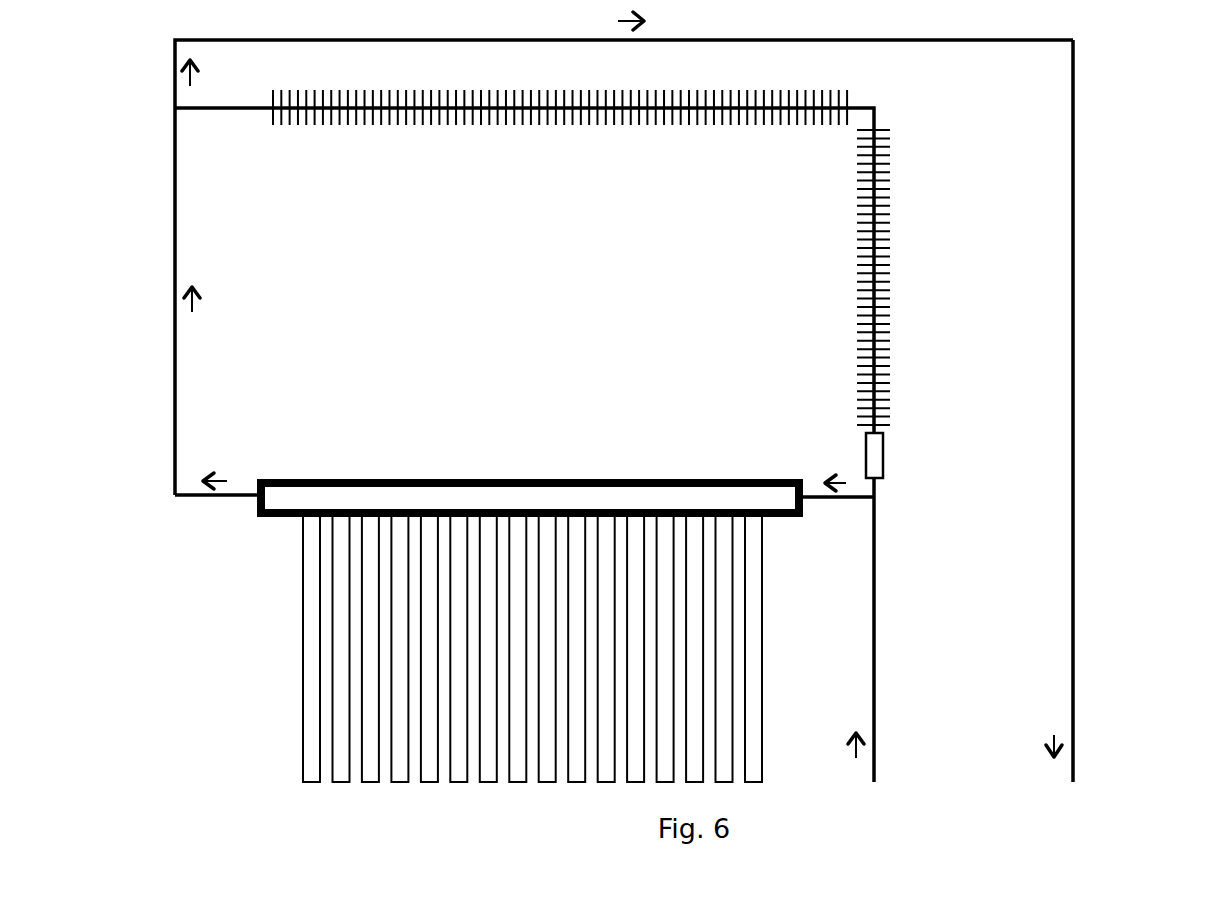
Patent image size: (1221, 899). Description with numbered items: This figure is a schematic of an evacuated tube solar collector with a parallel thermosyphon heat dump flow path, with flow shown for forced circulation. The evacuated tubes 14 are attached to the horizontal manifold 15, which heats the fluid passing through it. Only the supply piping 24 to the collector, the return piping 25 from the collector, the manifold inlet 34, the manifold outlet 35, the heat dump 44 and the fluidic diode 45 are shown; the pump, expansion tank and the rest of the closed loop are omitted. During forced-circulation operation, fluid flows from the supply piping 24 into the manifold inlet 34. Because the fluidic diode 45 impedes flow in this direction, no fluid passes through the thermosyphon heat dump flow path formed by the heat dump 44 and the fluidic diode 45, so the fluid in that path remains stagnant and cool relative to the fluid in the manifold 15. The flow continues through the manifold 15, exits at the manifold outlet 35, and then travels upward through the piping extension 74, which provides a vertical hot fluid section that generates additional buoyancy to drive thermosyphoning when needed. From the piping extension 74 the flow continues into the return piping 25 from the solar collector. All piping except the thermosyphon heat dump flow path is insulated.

The piping extension 74 is at (168, 256).
The return piping 25 is at (1080, 695).
The supply piping 24 is at (882, 640).
The heat dump 44 is at (847, 211).
The fluidic diode 45 is at (893, 460).
The manifold 15 is at (525, 472).
The evacuated tubes 14 is at (288, 648).
The manifold outlet 35 is at (250, 500).
The manifold inlet 34 is at (816, 520).